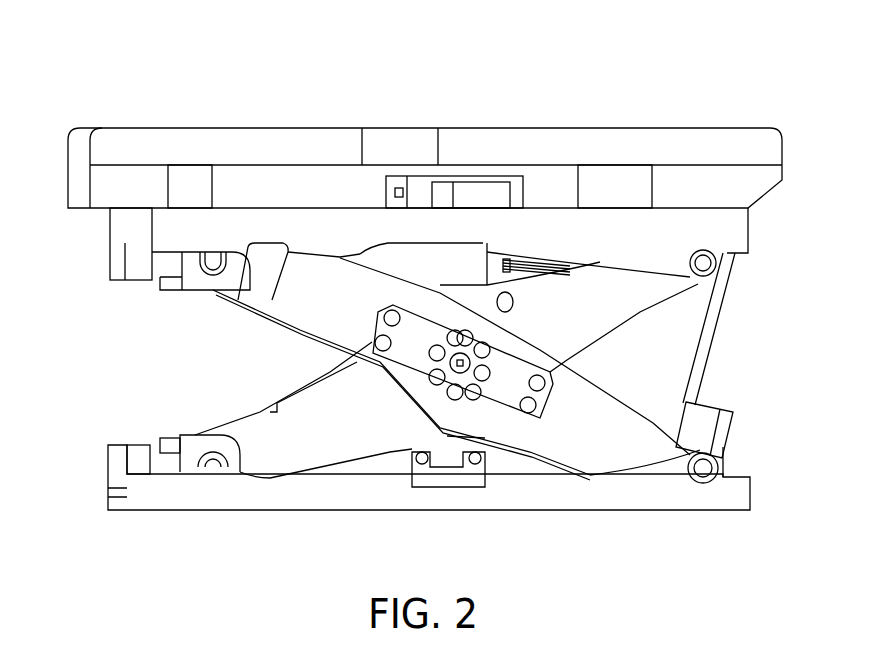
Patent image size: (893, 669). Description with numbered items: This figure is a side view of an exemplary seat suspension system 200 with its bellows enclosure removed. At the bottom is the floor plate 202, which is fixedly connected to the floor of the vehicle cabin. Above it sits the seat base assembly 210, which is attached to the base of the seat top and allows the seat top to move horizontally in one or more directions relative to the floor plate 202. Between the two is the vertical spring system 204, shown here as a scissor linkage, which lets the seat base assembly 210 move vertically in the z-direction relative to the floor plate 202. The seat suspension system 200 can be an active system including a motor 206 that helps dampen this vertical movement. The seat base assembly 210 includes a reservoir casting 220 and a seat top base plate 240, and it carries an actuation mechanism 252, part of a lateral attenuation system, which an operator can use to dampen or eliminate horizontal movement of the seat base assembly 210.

The seat suspension system 200 is at (638, 97).
The floor plate 202 is at (225, 502).
The vertical spring system 204 is at (230, 338).
The motor 206 is at (455, 258).
The seat base assembly 210 is at (82, 220).
The reservoir casting 220 is at (118, 232).
The seat top base plate 240 is at (213, 135).
The actuation mechanism 252 is at (420, 190).